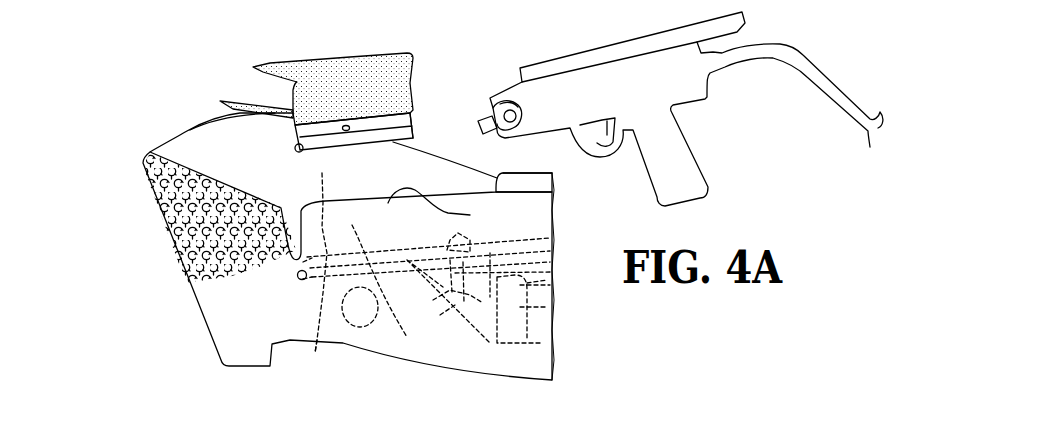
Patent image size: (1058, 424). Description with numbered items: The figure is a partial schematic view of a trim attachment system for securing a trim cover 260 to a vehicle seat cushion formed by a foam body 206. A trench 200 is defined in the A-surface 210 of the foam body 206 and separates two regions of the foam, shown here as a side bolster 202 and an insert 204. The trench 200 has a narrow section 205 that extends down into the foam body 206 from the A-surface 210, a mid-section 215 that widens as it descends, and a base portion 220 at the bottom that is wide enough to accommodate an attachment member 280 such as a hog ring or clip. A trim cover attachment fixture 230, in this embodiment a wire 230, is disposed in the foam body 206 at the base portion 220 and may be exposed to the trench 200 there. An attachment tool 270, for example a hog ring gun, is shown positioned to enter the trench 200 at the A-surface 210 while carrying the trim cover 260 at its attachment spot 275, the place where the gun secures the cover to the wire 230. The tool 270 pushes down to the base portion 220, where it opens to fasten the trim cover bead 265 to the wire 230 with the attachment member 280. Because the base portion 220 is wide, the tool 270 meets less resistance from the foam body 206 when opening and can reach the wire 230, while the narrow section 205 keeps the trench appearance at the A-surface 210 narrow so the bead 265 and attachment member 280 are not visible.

The trench 200 is at (278, 243).
The side bolster 202 is at (223, 140).
The insert 204 is at (448, 213).
The narrow section 205 is at (410, 337).
The foam body 206 is at (112, 199).
The A-surface 210 is at (192, 142).
The mid-section 215 is at (321, 192).
The base portion 220 is at (294, 270).
The trim cover attachment fixture 230 is at (315, 353).
The trim cover 260 is at (336, 100).
The trim cover bead 265 is at (417, 132).
The attachment tool 270 is at (500, 96).
The attachment spot 275 is at (349, 129).
The attachment member 280 is at (484, 125).